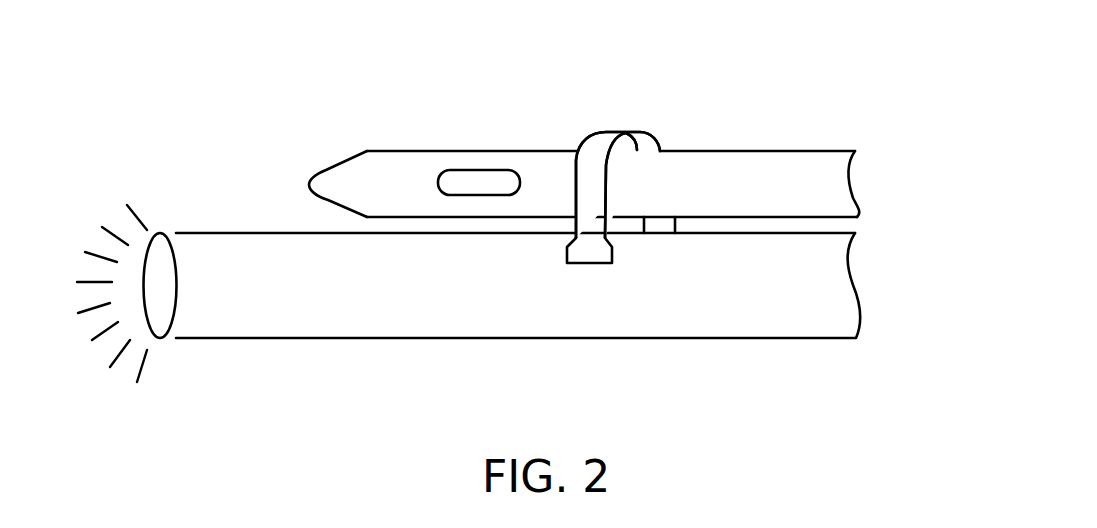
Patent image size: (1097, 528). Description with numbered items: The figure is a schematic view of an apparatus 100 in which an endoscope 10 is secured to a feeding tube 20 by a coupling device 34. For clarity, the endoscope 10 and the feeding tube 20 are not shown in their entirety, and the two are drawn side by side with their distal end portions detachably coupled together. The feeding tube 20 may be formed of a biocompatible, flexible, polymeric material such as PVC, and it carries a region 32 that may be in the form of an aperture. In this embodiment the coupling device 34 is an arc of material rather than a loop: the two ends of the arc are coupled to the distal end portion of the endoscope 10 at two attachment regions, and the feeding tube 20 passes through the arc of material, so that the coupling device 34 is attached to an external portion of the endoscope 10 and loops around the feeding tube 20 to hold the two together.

The apparatus 100 is at (468, 282).
The endoscope 10 is at (468, 323).
The feeding tube 20 is at (547, 141).
The region 32 is at (472, 175).
The coupling device 34 is at (647, 182).